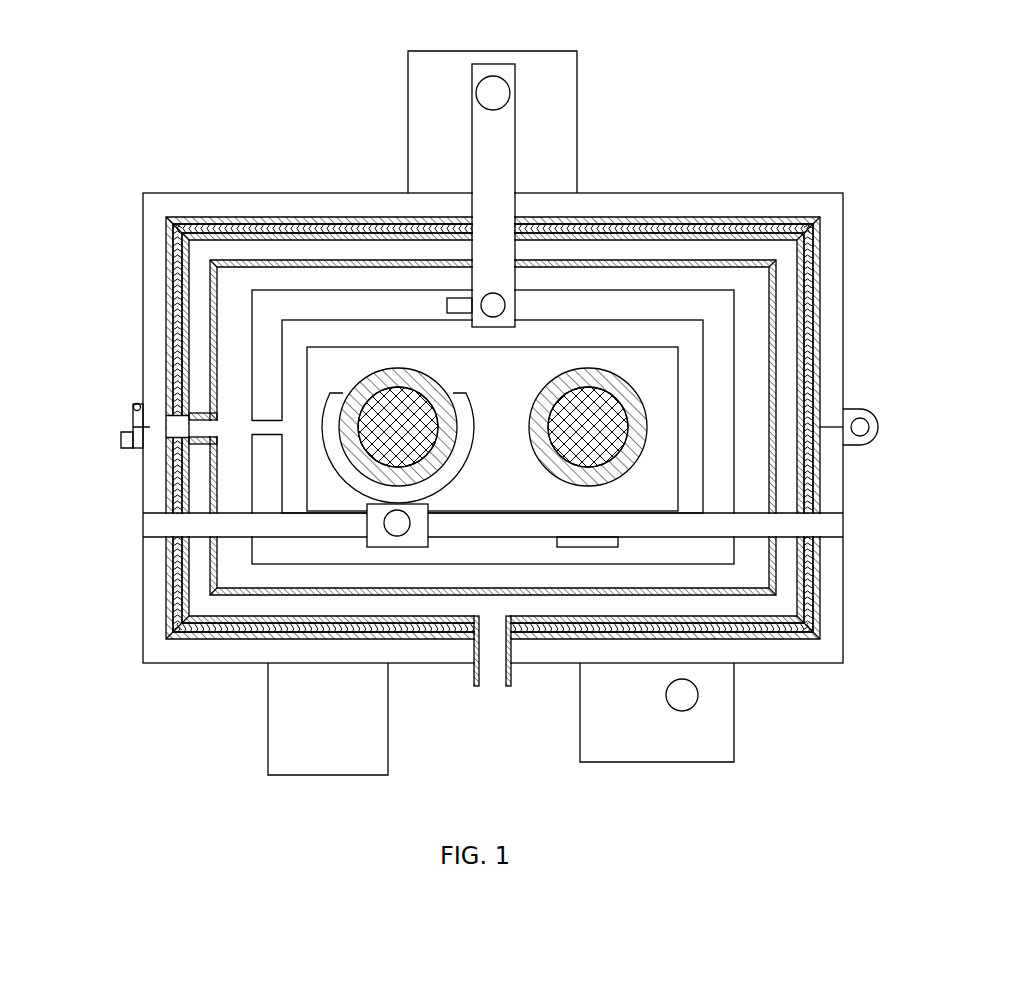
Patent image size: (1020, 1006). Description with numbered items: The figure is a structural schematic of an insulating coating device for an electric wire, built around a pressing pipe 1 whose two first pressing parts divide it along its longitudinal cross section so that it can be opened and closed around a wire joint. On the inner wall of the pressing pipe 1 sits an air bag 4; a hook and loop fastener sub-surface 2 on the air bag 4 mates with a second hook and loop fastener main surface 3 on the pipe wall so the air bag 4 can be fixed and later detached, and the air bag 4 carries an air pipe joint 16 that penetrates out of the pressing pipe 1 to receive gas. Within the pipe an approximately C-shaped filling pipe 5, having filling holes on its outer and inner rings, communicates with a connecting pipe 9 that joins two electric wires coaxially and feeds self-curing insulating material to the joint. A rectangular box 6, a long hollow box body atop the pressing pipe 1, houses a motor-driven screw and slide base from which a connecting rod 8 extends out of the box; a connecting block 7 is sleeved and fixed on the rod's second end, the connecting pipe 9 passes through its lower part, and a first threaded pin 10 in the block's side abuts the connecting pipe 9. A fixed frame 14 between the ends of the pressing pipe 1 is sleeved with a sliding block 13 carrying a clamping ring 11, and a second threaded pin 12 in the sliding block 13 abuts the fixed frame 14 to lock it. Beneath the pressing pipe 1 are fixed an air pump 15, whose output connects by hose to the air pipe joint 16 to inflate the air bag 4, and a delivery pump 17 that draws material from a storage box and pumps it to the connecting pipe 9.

The pressing pipe 1 is at (835, 225).
The hook and loop fastener sub-surface 2 is at (818, 227).
The second hook and loop fastener main surface 3 is at (766, 229).
The air bag 4 is at (731, 252).
The filling pipe 5 is at (660, 302).
The rectangular box 6 is at (563, 138).
The connecting block 7 is at (505, 138).
The connecting rod 8 is at (494, 92).
The connecting pipe 9 is at (492, 303).
The first threaded pin 10 is at (462, 305).
The clamping ring 11 is at (327, 418).
The second threaded pin 12 is at (397, 523).
The sliding block 13 is at (380, 533).
The fixed frame 14 is at (175, 527).
The air pump 15 is at (352, 745).
The air pipe joint 16 is at (490, 676).
The delivery pump 17 is at (722, 745).